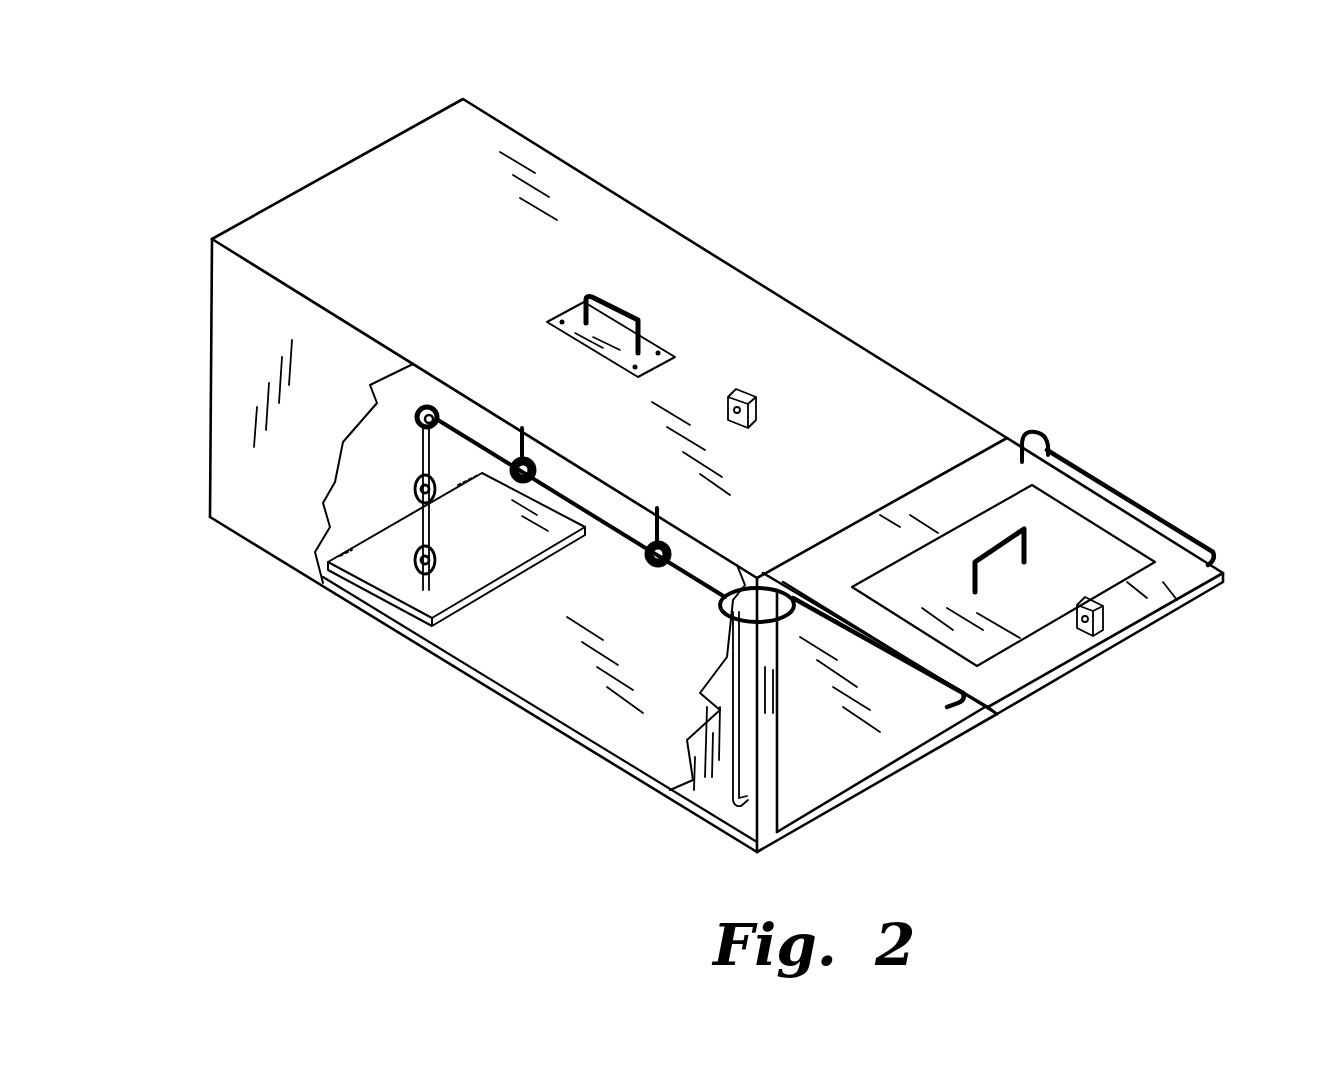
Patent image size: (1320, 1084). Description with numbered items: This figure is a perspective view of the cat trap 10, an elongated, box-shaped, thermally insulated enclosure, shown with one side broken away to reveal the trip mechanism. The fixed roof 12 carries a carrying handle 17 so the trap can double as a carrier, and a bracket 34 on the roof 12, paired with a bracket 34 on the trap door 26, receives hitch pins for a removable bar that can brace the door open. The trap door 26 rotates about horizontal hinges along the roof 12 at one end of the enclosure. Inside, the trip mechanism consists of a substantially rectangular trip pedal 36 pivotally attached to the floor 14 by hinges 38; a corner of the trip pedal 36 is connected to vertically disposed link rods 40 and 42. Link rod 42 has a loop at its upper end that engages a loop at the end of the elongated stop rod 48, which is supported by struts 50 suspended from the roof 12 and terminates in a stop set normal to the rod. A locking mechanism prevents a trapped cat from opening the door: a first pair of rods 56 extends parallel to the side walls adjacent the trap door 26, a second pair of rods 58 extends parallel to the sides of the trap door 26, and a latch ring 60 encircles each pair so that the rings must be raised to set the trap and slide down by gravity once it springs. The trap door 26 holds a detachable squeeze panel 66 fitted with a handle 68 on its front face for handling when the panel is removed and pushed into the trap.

The cat trap 10 is at (272, 686).
The roof 12 is at (352, 197).
The floor 14 is at (586, 714).
The carrying handle 17 is at (618, 300).
The trap door 26 is at (1225, 573).
The bracket 34 is at (758, 413).
The trip pedal 36 is at (531, 544).
The hinges 38 is at (472, 486).
The link rod 40 is at (423, 522).
The link rod 42 is at (422, 448).
The stop rod 48 is at (733, 617).
The struts 50 is at (655, 513).
The first pair of rods 56 is at (712, 818).
The second pair of rods 58 is at (1153, 507).
The latch ring 60 is at (1033, 435).
The squeeze panel 66 is at (1068, 576).
The handle 68 is at (1024, 525).